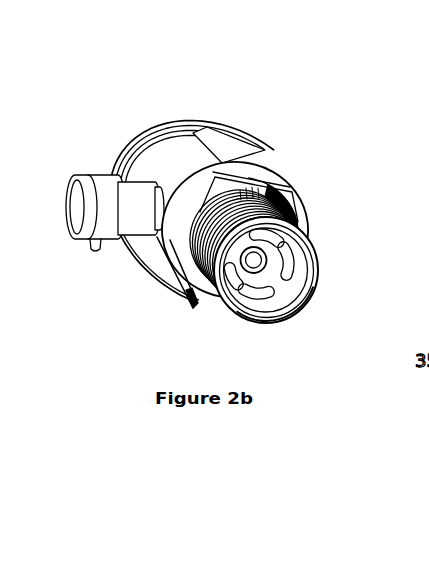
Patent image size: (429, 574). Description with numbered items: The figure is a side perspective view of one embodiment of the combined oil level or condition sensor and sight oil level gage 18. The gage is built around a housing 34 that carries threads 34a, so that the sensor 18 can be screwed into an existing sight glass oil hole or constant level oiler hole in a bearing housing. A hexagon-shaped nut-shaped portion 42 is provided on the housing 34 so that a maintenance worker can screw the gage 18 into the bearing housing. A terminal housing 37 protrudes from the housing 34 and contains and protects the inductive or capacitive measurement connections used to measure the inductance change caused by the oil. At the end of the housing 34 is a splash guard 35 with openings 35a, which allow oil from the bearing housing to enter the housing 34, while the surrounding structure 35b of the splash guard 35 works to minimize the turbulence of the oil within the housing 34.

The oil level or condition sensor 18 is at (217, 202).
The housing 34 is at (178, 155).
The threads 34a is at (193, 305).
The terminal housing 37 is at (95, 174).
The nut-shaped portion 42 is at (215, 238).
The splash guard 35 is at (306, 288).
The openings 35a is at (296, 260).
The surrounding structure 35b is at (241, 305).